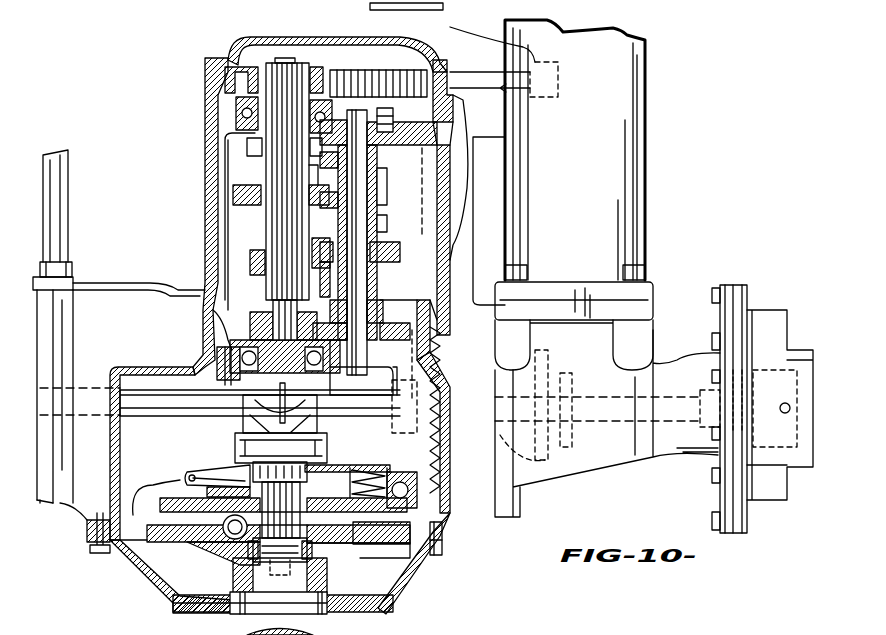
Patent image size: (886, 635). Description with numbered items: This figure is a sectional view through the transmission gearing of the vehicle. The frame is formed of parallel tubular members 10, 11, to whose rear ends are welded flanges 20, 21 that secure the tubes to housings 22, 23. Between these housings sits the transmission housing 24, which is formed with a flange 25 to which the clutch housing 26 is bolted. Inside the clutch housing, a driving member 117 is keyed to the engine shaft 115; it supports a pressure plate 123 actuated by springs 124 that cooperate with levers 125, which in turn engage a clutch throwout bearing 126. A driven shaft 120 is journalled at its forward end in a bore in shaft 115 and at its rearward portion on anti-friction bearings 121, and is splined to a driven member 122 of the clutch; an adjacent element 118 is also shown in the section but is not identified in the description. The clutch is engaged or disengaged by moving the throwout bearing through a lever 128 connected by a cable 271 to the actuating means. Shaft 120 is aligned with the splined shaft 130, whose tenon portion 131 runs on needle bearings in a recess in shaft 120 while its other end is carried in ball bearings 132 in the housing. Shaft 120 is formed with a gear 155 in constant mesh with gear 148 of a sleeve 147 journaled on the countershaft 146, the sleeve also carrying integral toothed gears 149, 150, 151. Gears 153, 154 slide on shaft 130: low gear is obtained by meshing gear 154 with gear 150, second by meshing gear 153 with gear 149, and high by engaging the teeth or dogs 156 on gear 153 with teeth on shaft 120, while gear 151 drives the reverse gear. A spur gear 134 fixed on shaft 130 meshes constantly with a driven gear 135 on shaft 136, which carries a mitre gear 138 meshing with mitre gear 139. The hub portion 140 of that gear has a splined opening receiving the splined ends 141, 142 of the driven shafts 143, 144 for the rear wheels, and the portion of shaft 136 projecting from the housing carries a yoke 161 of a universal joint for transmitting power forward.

The tubular member 10 is at (60, 190).
The tubular member 11 is at (642, 106).
The flange 20 is at (70, 272).
The flange 21 is at (655, 290).
The housing 22 is at (62, 318).
The housing 23 is at (648, 340).
The transmission housing 24 is at (157, 291).
The flange 25 is at (90, 522).
The clutch housing 26 is at (412, 575).
The engine shaft 115 is at (297, 583).
The driving member 117 is at (269, 523).
The housing bottom wall 118 is at (182, 553).
The driven shaft 120 is at (250, 470).
The anti-friction bearings 121 is at (237, 347).
The driven member 122 is at (177, 598).
The pressure plate 123 is at (180, 475).
The springs 124 is at (383, 468).
The levers 125 is at (402, 470).
The clutch throwout bearing 126 is at (240, 450).
The lever 128 is at (250, 425).
The splined shaft 130 is at (270, 222).
The tenon portion 131 is at (255, 312).
The ball bearings 132 is at (245, 112).
The spur gear 134 is at (348, 45).
The driven gear 135 is at (326, 70).
The shaft 136 is at (420, 300).
The mitre gear 138 is at (425, 327).
The mitre gear 139 is at (452, 432).
The hub portion 140 is at (540, 460).
The splined end 141 is at (527, 385).
The splined end 142 is at (450, 360).
The driven shaft 143 is at (592, 420).
The driven shaft 144 is at (137, 398).
The countershaft 146 is at (395, 252).
The sleeve 147 is at (380, 300).
The toothed gear 148 is at (373, 381).
The toothed gear 149 is at (300, 240).
The toothed gear 150 is at (300, 210).
The toothed gear 151 is at (292, 146).
The sliding gear 153 is at (250, 265).
The sliding gear 154 is at (245, 185).
The gear 155 is at (250, 340).
The teeth or dogs 156 is at (228, 262).
The yoke 161 is at (443, 10).
The cable 271 is at (188, 415).